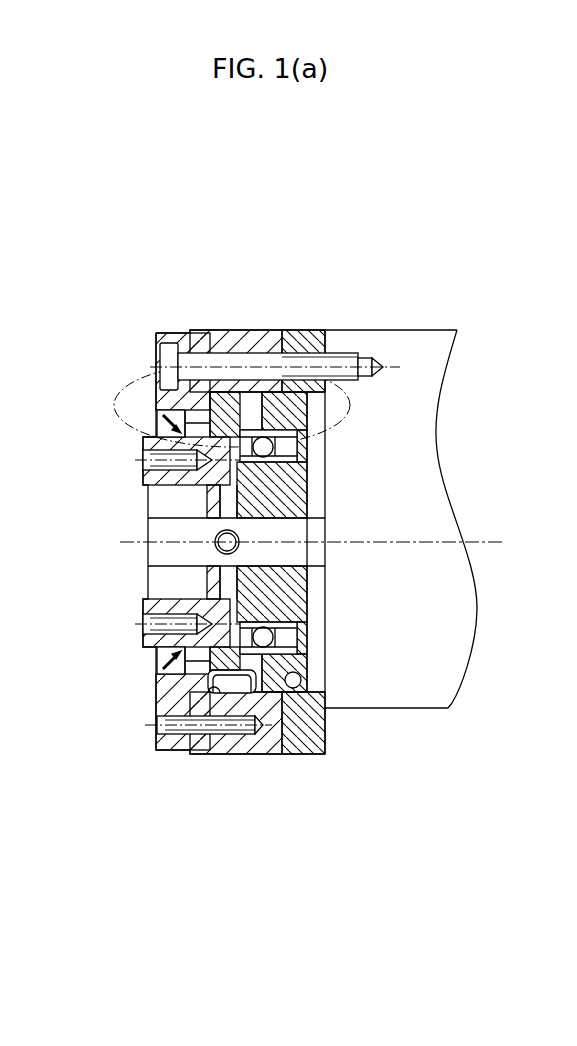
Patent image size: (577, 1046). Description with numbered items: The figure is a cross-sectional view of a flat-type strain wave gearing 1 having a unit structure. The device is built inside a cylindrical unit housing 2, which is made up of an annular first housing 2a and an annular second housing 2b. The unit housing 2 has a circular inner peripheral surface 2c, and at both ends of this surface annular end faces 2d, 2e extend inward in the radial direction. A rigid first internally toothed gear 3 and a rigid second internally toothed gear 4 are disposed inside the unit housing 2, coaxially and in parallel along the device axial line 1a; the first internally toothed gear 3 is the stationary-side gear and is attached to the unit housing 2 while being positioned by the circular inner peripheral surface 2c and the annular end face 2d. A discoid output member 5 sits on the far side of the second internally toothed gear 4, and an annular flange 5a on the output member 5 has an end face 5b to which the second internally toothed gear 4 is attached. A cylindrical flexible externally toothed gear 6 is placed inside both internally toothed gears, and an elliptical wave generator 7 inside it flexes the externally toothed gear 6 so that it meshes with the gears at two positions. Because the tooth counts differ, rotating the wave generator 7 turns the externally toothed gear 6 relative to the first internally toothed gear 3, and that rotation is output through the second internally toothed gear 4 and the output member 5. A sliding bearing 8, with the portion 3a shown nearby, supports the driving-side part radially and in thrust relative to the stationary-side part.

The strain wave gearing 1 is at (88, 368).
The device axial line 1a is at (455, 530).
The unit housing 2 is at (279, 532).
The first housing 2a is at (312, 330).
The second housing 2b is at (208, 348).
The circular inner peripheral surface 2c is at (222, 698).
The annular end face 2d is at (327, 733).
The annular end face 2e is at (212, 695).
The first internally toothed gear 3 is at (314, 536).
The rotor flange 3a is at (290, 748).
The second internally toothed gear 4 is at (240, 410).
The output member 5 is at (141, 536).
The annular flange 5a is at (225, 412).
The end face 5b is at (143, 478).
The flexible externally toothed gear 6 is at (298, 455).
The wave generator 7 is at (301, 499).
The sliding bearing 8 is at (248, 708).